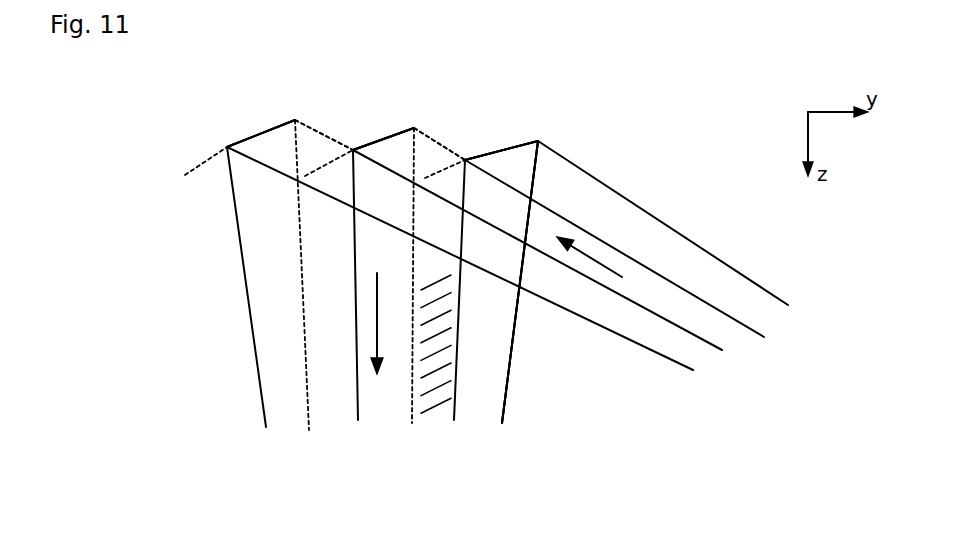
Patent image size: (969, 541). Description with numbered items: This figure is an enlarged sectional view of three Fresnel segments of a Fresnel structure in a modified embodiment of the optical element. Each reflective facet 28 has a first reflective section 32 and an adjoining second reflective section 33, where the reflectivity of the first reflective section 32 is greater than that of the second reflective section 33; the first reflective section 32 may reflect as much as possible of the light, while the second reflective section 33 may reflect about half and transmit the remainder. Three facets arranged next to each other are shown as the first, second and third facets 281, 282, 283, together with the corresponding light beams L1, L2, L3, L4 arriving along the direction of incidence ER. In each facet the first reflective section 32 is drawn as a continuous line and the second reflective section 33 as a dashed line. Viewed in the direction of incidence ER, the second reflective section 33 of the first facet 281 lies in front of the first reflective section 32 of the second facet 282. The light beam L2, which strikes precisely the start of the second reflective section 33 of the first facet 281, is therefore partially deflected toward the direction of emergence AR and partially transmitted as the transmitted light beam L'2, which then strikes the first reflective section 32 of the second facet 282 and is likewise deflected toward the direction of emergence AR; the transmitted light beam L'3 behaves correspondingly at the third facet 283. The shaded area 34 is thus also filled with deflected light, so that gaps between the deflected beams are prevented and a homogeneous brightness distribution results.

The reflective facet 28 is at (278, 122).
The first reflective facet 281 is at (532, 140).
The second reflective facet 282 is at (403, 127).
The third reflective facet 283 is at (278, 122).
The first reflective section 32 is at (255, 135).
The second reflective section 33 is at (207, 157).
The area 34 is at (430, 412).
The light beam L1 is at (603, 133).
The light beam L2 is at (454, 415).
The light beam L3 is at (690, 222).
The light beam L4 is at (553, 304).
The transmitted light beam L'2 is at (443, 285).
The transmitted light beam L'3 is at (312, 260).
The direction of emergence AR is at (379, 284).
The direction of incidence ER is at (605, 267).